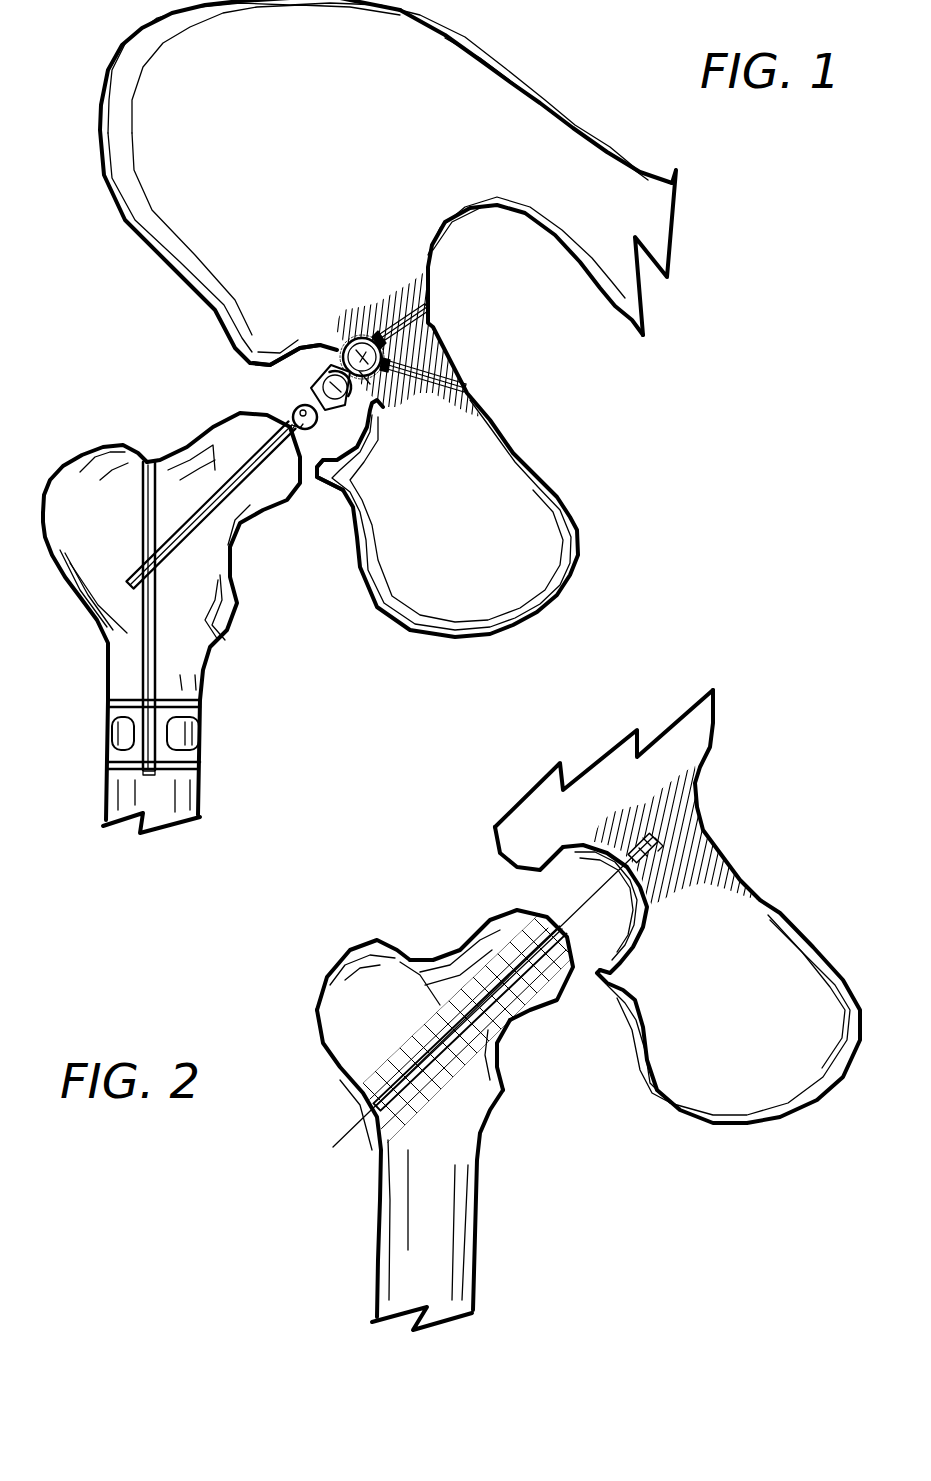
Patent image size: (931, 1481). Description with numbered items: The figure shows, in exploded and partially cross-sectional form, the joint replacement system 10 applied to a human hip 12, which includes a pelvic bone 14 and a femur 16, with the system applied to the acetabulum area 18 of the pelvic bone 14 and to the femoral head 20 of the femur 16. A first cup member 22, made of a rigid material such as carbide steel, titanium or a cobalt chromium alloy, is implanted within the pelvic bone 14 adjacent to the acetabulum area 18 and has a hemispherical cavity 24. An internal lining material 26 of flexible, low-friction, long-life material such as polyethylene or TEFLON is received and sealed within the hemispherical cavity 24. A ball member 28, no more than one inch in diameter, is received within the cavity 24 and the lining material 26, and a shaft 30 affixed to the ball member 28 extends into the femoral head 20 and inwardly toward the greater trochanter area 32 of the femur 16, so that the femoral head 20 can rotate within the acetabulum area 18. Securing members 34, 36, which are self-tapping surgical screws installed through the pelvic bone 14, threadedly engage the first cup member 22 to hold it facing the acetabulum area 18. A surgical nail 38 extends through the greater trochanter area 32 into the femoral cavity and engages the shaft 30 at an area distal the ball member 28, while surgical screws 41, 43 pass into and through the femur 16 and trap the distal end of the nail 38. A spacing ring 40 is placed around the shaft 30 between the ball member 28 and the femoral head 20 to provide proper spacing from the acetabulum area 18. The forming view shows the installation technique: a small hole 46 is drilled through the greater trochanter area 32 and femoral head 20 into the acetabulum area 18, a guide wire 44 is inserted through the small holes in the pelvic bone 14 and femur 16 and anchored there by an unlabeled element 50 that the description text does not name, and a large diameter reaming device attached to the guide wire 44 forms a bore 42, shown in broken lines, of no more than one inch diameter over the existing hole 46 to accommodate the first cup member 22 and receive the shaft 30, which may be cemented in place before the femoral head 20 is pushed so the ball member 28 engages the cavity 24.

In FIG. 1, the joint replacement system 10 is at (557, 427).
In FIG. 2, the joint replacement system 10 is at (745, 822).
In FIG. 1, the human hip 12 is at (535, 122).
In FIG. 1, the pelvic bone 14 is at (420, 26).
In FIG. 2, the pelvic bone 14 is at (673, 737).
In FIG. 1, the femur 16 is at (193, 737).
In FIG. 2, the femur 16 is at (387, 1263).
In FIG. 1, the acetabulum area 18 is at (277, 360).
In FIG. 2, the acetabulum area 18 is at (570, 850).
In FIG. 1, the femoral head 20 is at (280, 497).
In FIG. 2, the femoral head 20 is at (513, 907).
In FIG. 1, the first cup member 22 is at (357, 335).
In FIG. 1, the hemispherical cavity 24 is at (348, 356).
In FIG. 1, the internal lining material 26 is at (353, 397).
In FIG. 1, the ball member 28 is at (307, 405).
In FIG. 1, the shaft 30 is at (223, 493).
In FIG. 1, the greater trochanter area 32 is at (93, 457).
In FIG. 2, the greater trochanter area 32 is at (407, 957).
In FIG. 1, the securing member 34 is at (433, 310).
In FIG. 1, the securing member 36 is at (463, 387).
In FIG. 1, the surgical nail 38 is at (150, 620).
In FIG. 1, the spacing ring 40 is at (337, 467).
In FIG. 1, the surgical screw 41 is at (107, 700).
In FIG. 2, the bore 42 is at (500, 1057).
In FIG. 1, the surgical screw 43 is at (197, 770).
In FIG. 2, the guide wire 44 is at (590, 903).
In FIG. 2, the small hole 46 is at (500, 997).
In FIG. 2, the acetabular anchor 50 is at (653, 913).